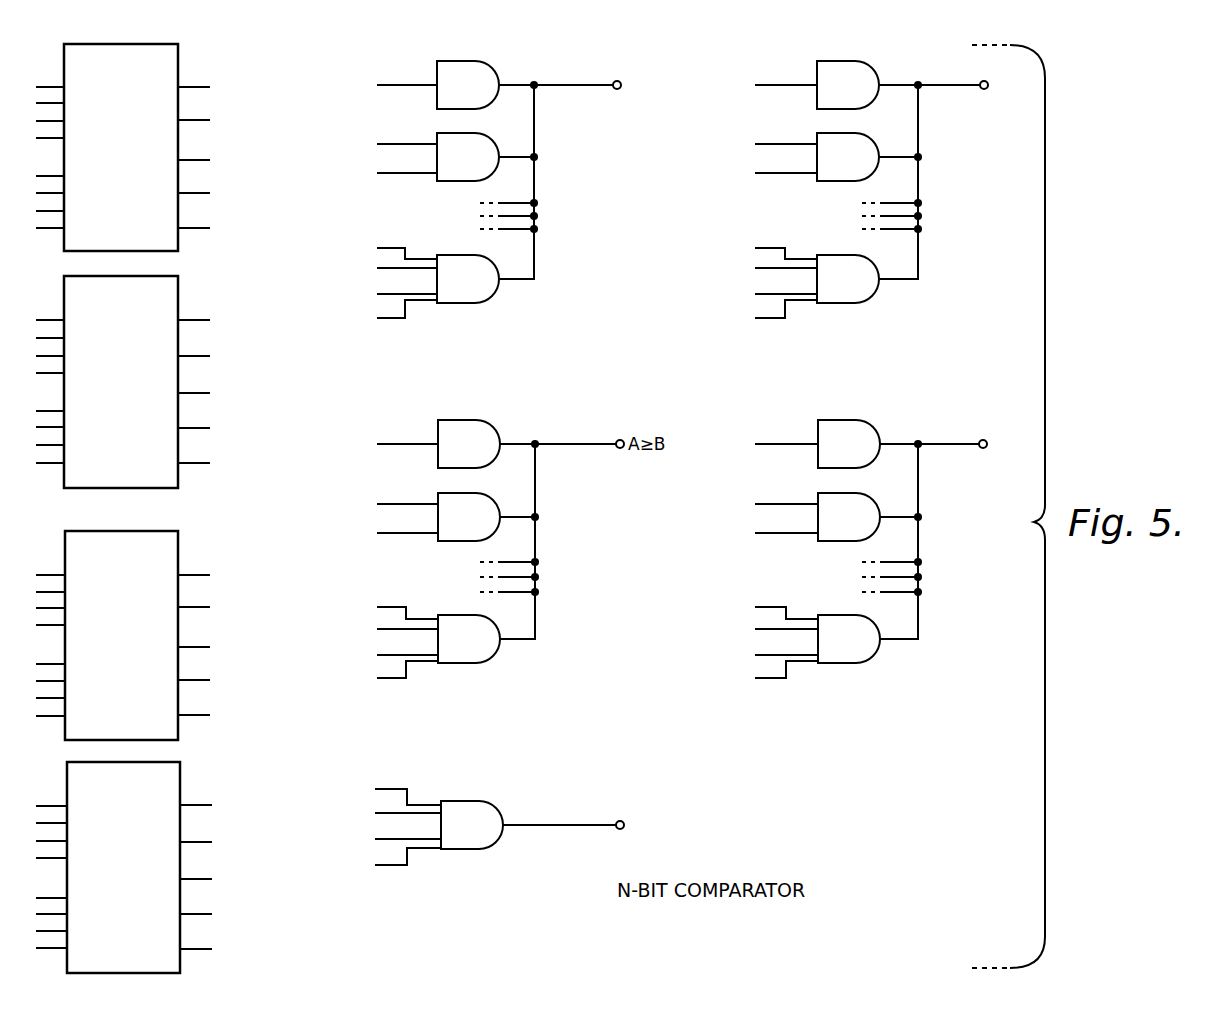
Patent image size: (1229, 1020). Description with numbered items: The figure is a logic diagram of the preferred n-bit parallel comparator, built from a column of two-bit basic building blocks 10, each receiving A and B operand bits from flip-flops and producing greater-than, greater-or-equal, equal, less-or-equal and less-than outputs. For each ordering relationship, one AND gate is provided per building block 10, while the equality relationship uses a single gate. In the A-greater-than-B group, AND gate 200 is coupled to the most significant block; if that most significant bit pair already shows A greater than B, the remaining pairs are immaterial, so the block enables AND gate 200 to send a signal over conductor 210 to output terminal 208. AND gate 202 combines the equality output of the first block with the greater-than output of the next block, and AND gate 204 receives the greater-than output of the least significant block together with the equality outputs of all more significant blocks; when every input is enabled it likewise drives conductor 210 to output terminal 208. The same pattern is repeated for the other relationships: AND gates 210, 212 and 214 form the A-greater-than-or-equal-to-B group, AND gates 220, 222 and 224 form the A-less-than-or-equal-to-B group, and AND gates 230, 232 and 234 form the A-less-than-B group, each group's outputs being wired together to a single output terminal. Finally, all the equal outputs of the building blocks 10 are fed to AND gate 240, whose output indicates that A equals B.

The basic building block 10 is at (147, 508).
The AND gate 200 is at (445, 94).
The AND gate 202 is at (445, 166).
The AND gate 204 is at (445, 288).
The output terminal 208 is at (616, 80).
The conductor 210 is at (558, 82).
The AND gate 212 is at (446, 526).
The AND gate 214 is at (446, 649).
The AND gate 220 is at (825, 94).
The AND gate 222 is at (825, 166).
The AND gate 224 is at (825, 288).
The AND gate 230 is at (826, 453).
The AND gate 232 is at (826, 526).
The AND gate 234 is at (826, 649).
The AND gate 240 is at (449, 834).